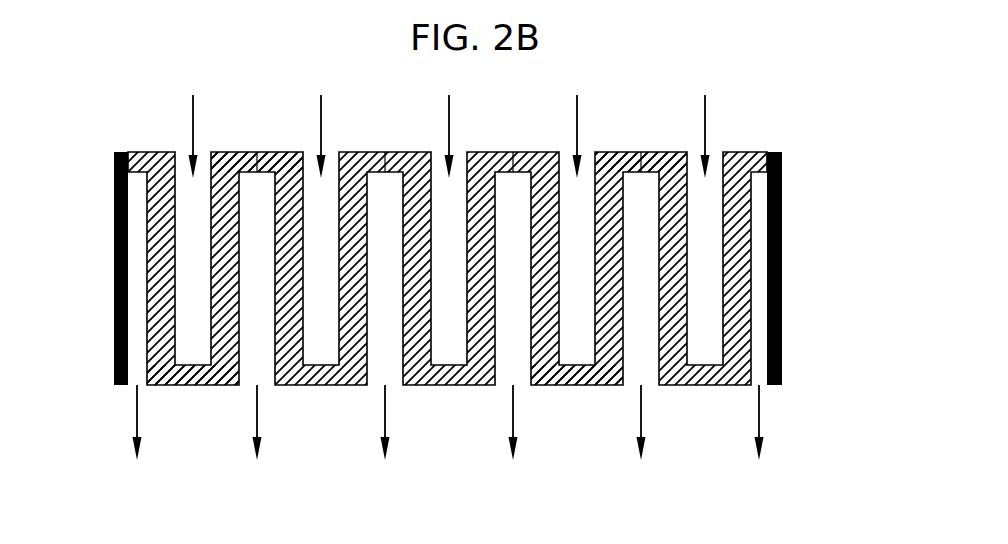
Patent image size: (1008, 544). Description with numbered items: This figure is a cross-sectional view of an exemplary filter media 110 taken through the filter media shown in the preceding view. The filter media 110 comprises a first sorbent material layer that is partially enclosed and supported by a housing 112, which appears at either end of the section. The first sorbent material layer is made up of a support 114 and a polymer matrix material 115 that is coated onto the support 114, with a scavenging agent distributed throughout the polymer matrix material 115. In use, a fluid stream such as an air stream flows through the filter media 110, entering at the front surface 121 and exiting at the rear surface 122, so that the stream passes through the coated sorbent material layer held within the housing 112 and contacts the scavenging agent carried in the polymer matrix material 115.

The filter media 110 is at (783, 122).
The housing 112 is at (115, 263).
The support 114 is at (587, 383).
The polymer matrix material 115 is at (605, 152).
The front surface 121 is at (183, 385).
The rear surface 122 is at (257, 152).